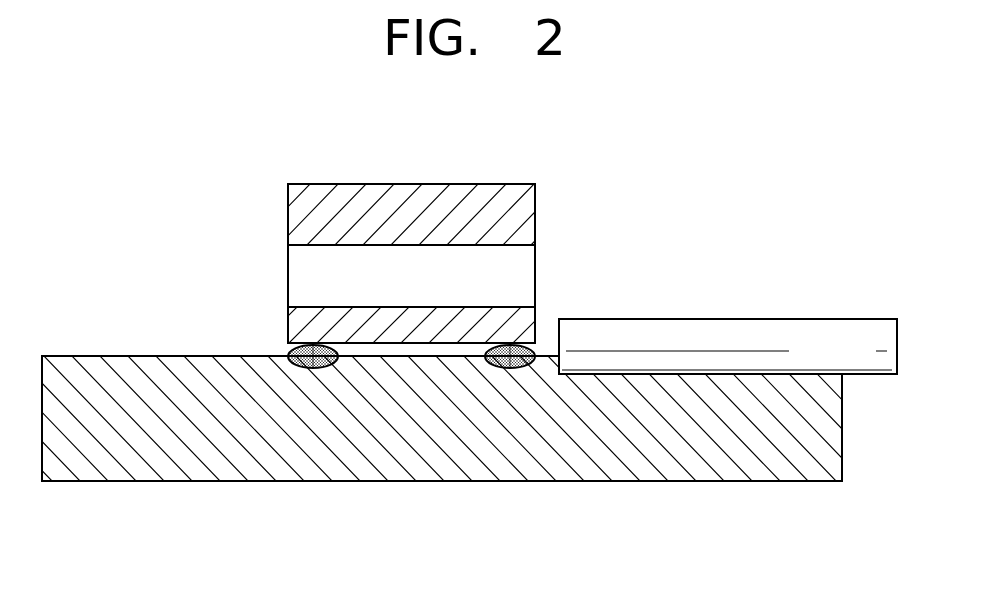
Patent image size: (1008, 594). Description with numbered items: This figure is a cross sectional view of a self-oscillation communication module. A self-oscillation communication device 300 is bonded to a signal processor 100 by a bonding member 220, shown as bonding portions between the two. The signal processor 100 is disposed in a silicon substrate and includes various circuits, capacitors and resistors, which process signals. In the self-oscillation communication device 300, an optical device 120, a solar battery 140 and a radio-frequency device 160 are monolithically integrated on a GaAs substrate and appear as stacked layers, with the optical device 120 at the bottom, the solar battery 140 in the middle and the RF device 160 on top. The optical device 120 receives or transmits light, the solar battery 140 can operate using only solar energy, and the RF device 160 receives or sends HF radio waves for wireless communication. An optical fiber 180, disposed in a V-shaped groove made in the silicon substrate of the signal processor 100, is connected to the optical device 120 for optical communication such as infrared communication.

The signal processor 100 is at (541, 455).
The optical device 120 is at (292, 322).
The solar battery 140 is at (292, 272).
The radio-frequency (RF) device 160 is at (292, 210).
The optical fiber 180 is at (722, 335).
The bonding member 220 is at (313, 368).
The self-oscillation communication device 300 is at (468, 157).